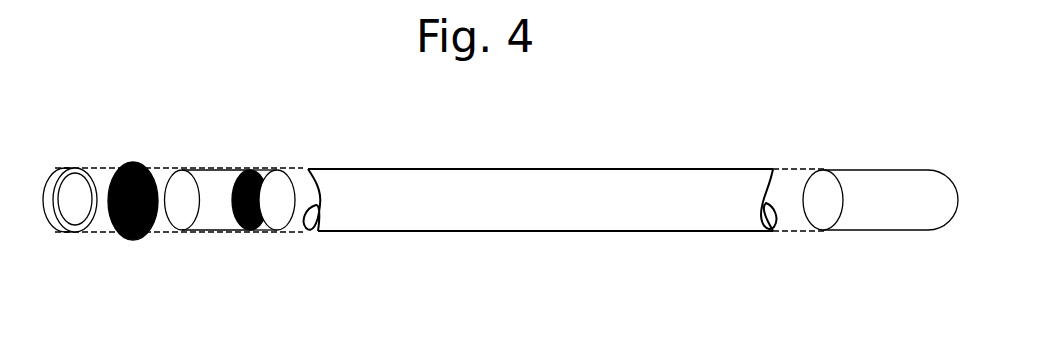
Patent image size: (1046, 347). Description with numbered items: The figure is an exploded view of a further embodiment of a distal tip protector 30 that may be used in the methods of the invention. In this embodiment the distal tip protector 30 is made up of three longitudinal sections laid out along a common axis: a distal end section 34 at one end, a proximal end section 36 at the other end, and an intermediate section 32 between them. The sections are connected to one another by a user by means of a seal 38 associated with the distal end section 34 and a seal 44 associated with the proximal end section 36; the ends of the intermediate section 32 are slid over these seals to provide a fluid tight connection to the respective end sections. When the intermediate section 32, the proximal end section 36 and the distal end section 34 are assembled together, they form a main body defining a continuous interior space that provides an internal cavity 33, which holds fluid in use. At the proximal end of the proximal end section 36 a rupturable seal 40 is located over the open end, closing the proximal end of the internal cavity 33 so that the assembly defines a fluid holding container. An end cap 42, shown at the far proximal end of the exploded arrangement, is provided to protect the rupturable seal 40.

The distal tip protector 30 is at (632, 142).
The intermediate section 32 is at (473, 163).
The internal cavity 33 is at (589, 220).
The distal end section 34 is at (881, 233).
The proximal end section 36 is at (265, 159).
The seal 38 is at (838, 168).
The rupturable seal 40 is at (138, 164).
The end cap 42 is at (63, 168).
The seal 44 is at (248, 233).